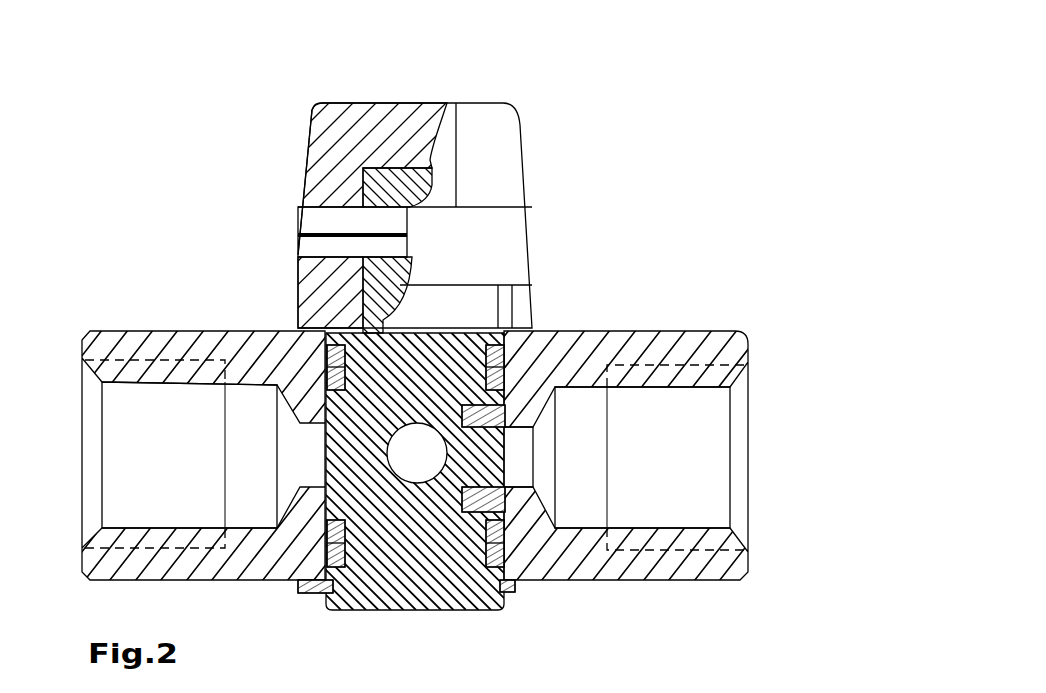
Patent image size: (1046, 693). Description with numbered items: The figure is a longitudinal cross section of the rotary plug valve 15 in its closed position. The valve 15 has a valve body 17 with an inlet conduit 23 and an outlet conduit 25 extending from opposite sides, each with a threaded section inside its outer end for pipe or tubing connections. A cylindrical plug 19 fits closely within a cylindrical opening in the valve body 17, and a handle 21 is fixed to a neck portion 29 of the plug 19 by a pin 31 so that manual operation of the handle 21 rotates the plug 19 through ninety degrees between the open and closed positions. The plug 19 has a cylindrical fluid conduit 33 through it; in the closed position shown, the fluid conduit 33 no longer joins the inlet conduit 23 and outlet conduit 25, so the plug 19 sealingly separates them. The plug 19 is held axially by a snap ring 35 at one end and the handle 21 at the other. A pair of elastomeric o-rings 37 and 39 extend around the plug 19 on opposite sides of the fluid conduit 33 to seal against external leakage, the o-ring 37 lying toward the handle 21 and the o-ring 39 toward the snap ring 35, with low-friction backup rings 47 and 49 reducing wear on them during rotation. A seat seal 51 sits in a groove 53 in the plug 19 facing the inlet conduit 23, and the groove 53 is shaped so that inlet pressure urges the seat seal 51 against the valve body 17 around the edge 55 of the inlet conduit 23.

The rotary plug valve 15 is at (135, 262).
The valve body 17 is at (668, 345).
The plug 19 is at (415, 595).
The handle 21 is at (370, 222).
The inlet conduit 23 is at (642, 457).
The outlet conduit 25 is at (189, 455).
The neck portion 29 is at (373, 172).
The pin 31 is at (338, 225).
The fluid conduit 33 is at (417, 453).
The snap ring 35 is at (510, 585).
The o-ring 37 is at (505, 440).
The o-ring 39 is at (330, 560).
The backup ring 47 is at (505, 370).
The backup ring 49 is at (340, 605).
The seat seal 51 is at (505, 500).
The groove 53 is at (505, 415).
The edge 55 is at (505, 487).